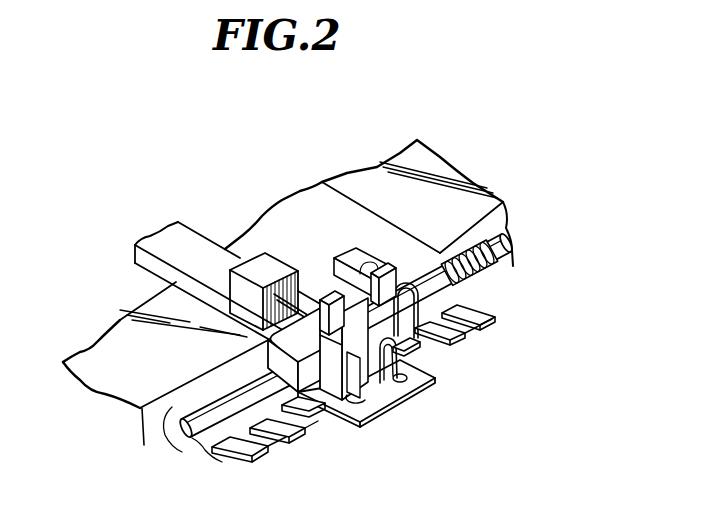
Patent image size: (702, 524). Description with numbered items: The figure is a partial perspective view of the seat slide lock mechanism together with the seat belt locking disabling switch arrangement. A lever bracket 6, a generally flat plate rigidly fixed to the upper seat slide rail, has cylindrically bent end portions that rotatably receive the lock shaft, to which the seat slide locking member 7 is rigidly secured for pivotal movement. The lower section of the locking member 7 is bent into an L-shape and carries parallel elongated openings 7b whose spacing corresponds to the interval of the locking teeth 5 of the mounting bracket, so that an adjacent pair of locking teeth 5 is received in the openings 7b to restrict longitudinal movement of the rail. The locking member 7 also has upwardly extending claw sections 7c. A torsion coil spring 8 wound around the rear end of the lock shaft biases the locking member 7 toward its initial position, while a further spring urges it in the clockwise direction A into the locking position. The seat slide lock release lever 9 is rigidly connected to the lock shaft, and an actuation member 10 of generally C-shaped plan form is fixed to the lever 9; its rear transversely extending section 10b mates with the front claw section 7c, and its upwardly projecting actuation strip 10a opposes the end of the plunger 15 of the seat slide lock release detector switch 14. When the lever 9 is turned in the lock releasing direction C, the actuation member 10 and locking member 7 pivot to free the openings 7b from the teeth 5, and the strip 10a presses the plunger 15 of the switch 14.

The locking teeth 5 is at (482, 286).
The lever bracket 6 is at (347, 192).
The seat slide locking member 7 is at (405, 348).
The elongated openings 7b is at (415, 360).
The upwardly extending claw sections 7c is at (323, 300).
The torsion coil spring 8 is at (494, 262).
The seat slide lock release lever 9 is at (217, 409).
The actuation member 10 is at (312, 375).
The actuation strip 10a is at (336, 385).
The rear transversely extending section 10b is at (380, 383).
The seat slide lock release detector switch 14 is at (254, 262).
The plunger 15 is at (290, 298).
The clockwise direction A is at (405, 290).
The lock releasing direction C is at (322, 265).